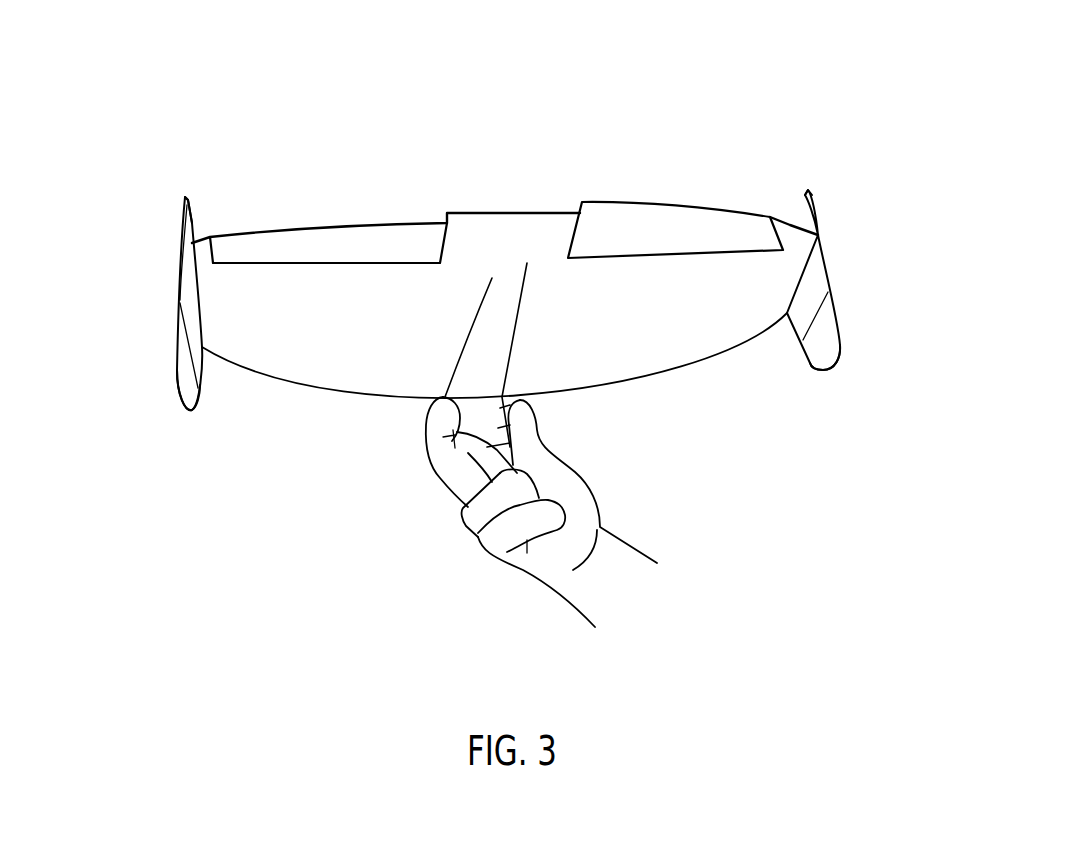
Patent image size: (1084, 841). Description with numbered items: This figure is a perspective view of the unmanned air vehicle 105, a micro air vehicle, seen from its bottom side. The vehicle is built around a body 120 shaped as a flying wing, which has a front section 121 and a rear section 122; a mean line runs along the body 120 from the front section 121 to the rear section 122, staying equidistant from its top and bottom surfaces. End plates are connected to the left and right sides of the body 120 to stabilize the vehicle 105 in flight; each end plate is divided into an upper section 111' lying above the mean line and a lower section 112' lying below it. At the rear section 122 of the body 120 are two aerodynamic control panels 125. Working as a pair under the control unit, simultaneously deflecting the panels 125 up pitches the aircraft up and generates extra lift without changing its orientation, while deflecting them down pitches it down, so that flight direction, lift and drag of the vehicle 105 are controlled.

The unmanned air vehicle 105 is at (642, 68).
The upper section 111' is at (224, 184).
The lower section 112' is at (220, 409).
The body 120 is at (590, 337).
The front section 121 is at (408, 387).
The rear section 122 is at (515, 238).
The aerodynamic control panels 125 is at (322, 230).